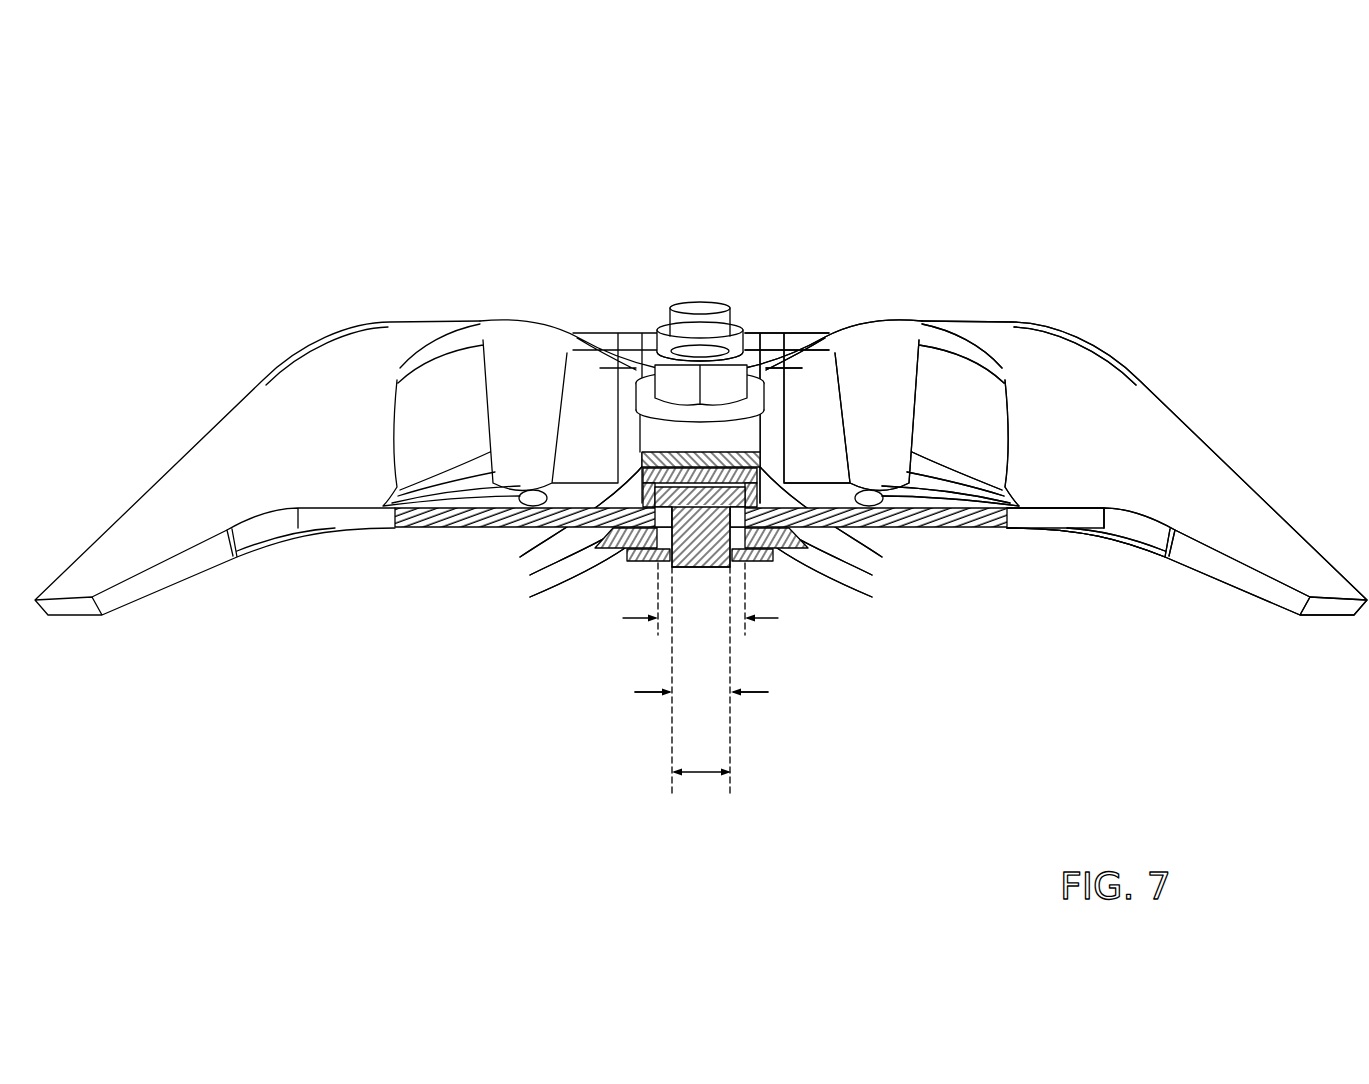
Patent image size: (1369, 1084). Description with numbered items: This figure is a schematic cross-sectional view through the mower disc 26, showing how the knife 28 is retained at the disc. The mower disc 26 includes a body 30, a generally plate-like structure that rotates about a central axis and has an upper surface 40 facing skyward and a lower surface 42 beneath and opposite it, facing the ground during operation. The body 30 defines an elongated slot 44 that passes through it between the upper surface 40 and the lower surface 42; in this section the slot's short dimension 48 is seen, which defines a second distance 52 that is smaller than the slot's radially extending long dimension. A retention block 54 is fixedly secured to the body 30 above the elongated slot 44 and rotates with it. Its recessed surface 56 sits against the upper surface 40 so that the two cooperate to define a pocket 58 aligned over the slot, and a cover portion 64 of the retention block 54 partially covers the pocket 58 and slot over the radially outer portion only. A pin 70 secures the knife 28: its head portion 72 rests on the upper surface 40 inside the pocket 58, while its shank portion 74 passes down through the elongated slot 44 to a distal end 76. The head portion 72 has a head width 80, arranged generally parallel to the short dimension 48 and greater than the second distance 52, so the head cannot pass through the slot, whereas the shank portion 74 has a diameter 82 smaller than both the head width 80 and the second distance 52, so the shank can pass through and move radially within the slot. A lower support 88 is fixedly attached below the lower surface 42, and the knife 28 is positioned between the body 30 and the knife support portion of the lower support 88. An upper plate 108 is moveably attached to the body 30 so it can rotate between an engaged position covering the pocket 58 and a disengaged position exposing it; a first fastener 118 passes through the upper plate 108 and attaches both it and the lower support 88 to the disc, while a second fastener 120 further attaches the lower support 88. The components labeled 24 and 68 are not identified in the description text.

The fan assembly 24 is at (1133, 136).
The mower disc 26 is at (1075, 340).
The knife 28 is at (795, 547).
The body 30 is at (947, 319).
The upper surface 40 is at (1030, 508).
The lower surface 42 is at (1023, 530).
The elongated slot 44 is at (745, 530).
The short dimension 48 is at (635, 692).
The second distance 52 is at (643, 693).
The retention block 54 is at (633, 487).
The recessed surface 56 is at (750, 478).
The pocket 58 is at (760, 497).
The cover portion 64 is at (645, 452).
The bushing 68 is at (645, 460).
The pin 70 is at (668, 555).
The head portion 72 is at (657, 520).
The shank portion 74 is at (657, 540).
The distal end 76 is at (697, 567).
The head width 80 is at (623, 618).
The diameter 82 is at (707, 776).
The lower support 88 is at (768, 562).
The upper plate 108 is at (720, 447).
The first fastener 118 is at (712, 350).
The second fastener 120 is at (689, 306).